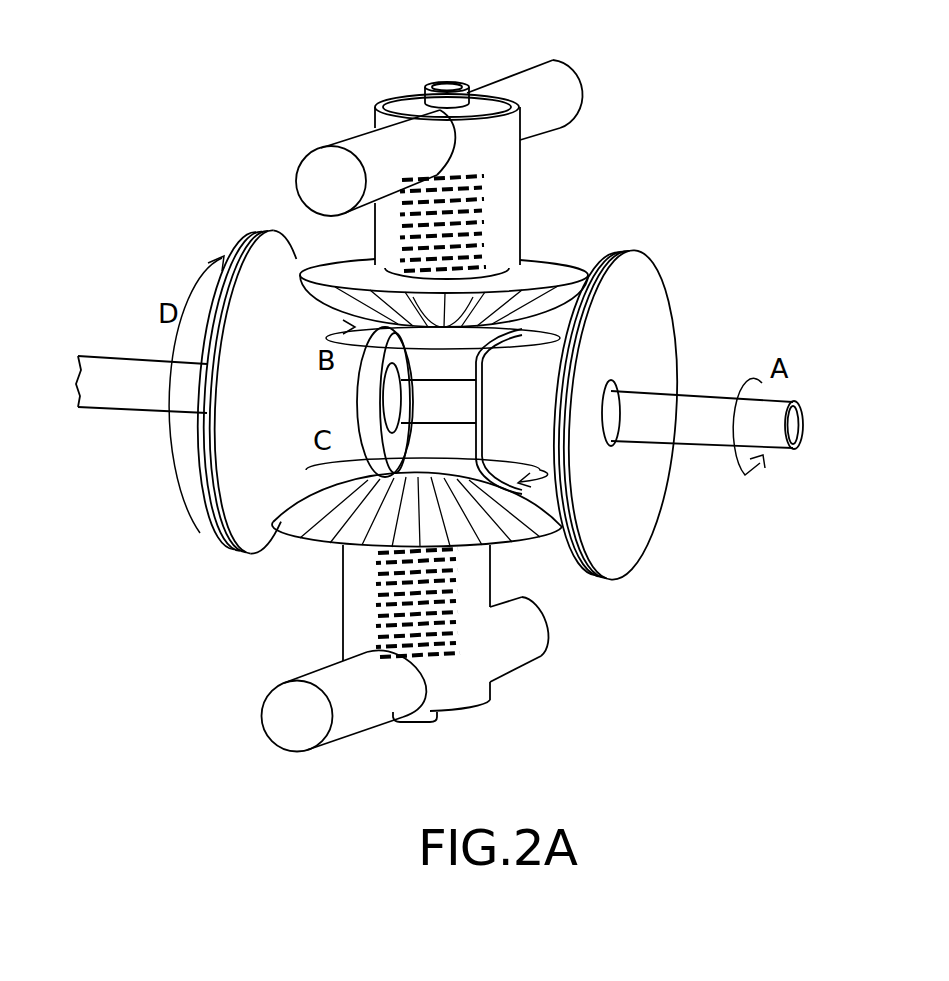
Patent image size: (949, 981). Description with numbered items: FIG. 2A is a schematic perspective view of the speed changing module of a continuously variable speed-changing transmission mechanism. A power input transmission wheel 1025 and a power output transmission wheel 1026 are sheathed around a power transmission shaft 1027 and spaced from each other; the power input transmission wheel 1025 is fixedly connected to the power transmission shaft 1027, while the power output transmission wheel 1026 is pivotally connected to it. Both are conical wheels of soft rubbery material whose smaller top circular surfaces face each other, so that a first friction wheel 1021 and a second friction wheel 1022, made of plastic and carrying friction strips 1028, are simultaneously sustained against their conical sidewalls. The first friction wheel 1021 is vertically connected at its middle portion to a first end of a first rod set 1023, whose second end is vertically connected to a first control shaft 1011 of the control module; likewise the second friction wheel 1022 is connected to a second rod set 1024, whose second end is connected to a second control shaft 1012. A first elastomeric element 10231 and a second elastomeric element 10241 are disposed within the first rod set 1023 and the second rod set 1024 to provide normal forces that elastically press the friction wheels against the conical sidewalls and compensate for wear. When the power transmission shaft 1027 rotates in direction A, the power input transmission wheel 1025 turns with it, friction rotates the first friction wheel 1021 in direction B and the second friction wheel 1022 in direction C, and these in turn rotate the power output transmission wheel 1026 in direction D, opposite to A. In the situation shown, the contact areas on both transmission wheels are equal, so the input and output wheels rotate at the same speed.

The first control shaft 1011 is at (523, 87).
The second control shaft 1012 is at (353, 712).
The first friction wheel 1021 is at (550, 273).
The second friction wheel 1022 is at (333, 530).
The first rod set 1023 is at (500, 240).
The first elastomeric element 10231 is at (477, 213).
The second rod set 1024 is at (473, 623).
The second elastomeric element 10241 is at (443, 660).
The power input transmission wheel 1025 is at (642, 517).
The power output transmission wheel 1026 is at (277, 253).
The power transmission shaft 1027 is at (800, 418).
The friction strips 1028 is at (574, 330).